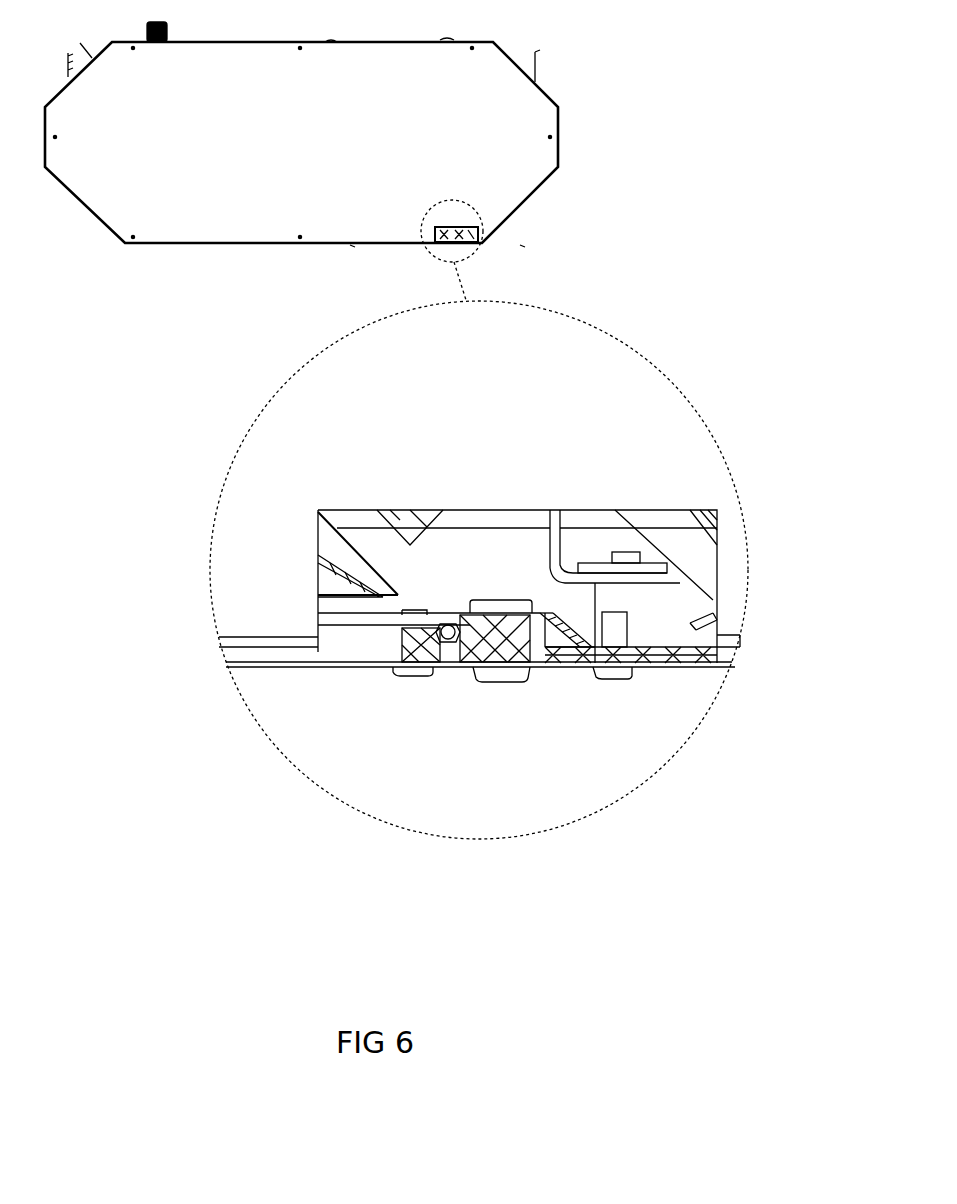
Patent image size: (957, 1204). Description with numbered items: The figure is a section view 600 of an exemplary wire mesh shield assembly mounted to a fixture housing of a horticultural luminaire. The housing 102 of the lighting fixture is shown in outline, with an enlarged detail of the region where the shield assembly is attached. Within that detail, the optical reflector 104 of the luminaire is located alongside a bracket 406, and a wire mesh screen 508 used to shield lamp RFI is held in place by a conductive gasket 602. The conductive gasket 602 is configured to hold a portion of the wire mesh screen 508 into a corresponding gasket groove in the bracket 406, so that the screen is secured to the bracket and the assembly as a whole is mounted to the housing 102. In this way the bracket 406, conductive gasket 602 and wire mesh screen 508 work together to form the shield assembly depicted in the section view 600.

The housing 102 is at (733, 797).
The optical reflector 104 is at (343, 575).
The bracket 406 is at (560, 623).
The wire mesh screen 508 is at (418, 647).
The section view 600 is at (479, 519).
The conductive gasket 602 is at (445, 640).